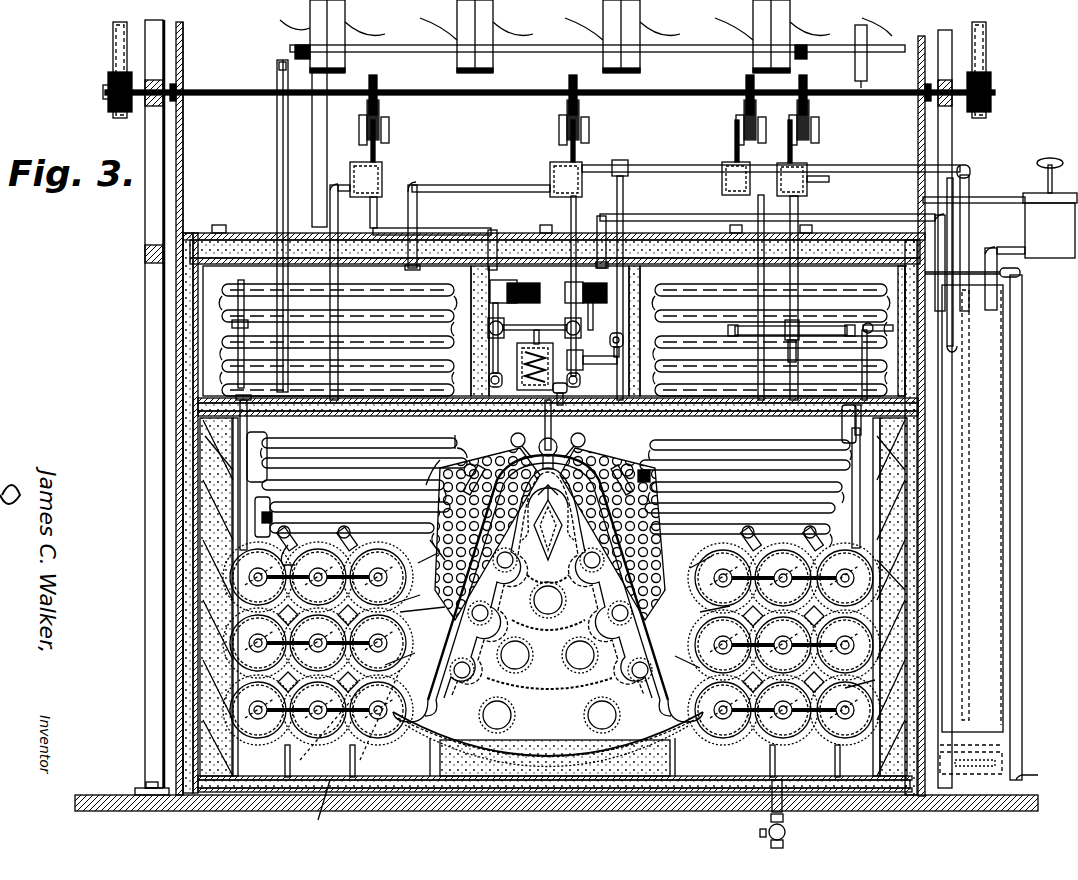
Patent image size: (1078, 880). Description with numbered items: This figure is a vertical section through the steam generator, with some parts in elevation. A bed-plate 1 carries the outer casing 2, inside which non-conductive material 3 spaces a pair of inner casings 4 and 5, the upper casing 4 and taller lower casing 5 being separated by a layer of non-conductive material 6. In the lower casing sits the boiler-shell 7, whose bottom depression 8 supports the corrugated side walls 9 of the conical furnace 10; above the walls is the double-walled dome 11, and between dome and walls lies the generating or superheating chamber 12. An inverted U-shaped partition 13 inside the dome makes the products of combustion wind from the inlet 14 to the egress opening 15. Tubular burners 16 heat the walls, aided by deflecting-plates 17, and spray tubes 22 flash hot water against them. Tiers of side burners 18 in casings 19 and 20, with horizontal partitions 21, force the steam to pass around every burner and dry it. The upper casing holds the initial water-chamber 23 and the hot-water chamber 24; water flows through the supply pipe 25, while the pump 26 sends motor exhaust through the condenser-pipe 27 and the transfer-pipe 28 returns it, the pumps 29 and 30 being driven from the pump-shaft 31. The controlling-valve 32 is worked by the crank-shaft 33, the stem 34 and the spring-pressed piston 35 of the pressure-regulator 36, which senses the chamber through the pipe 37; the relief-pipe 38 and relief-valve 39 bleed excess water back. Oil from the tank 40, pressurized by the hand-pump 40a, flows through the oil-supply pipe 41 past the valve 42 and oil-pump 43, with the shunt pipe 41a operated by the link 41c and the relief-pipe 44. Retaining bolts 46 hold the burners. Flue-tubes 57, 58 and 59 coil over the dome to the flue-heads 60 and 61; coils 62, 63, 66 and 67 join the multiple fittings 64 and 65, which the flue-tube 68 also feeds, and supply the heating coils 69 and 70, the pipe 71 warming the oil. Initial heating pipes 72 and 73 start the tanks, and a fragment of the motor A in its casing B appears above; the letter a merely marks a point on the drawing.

The bed-plate 1 is at (122, 797).
The outer casing 2 is at (196, 401).
The non-conductive material 3 is at (200, 350).
The upper inner casing 4 is at (903, 388).
The lower inner casing 5 is at (852, 778).
The layer of non-conductive material 6 is at (196, 413).
The boiler-shell 7 is at (574, 740).
The longitudinal depression 8 is at (547, 746).
The corrugated side walls 9 is at (548, 714).
The furnace 10 is at (555, 742).
The dome 11 is at (547, 514).
The generating or superheating chamber 12 is at (548, 577).
The inverted U-shaped partition 13 is at (559, 496).
The dome inlet 14 is at (548, 523).
The egress opening 15 is at (548, 426).
The tubular burners 16 is at (549, 657).
The deflecting-plates 17 is at (549, 630).
The side burners 18 is at (551, 643).
The sheet-metal casing 19 is at (233, 650).
The sheet-metal casing 20 is at (880, 648).
The horizontal partitions 21 is at (552, 679).
The flashing or spray tubes 22 is at (551, 608).
The initial water-chamber 23 is at (725, 270).
The hot-water or low-pressure chamber 24 is at (232, 272).
The water-supply pipe 25 is at (448, 228).
The pump 26 is at (800, 182).
The condenser-pipe 27 is at (799, 206).
The transfer-pipe 28 is at (470, 186).
The water-pump 29 is at (363, 170).
The water-pump 30 is at (734, 135).
The pump-shaft 31 is at (520, 96).
The controlling-valve 32 is at (504, 324).
The crank-shaft 33 is at (555, 322).
The stem 34 is at (526, 365).
The spring-pressed piston 35 is at (497, 387).
The pressure-regulator 36 is at (586, 360).
The pipe 37 is at (581, 387).
The relief-pipe 38 is at (565, 292).
The relief-valve 39 is at (515, 320).
The oil-tank 40 is at (1001, 496).
The hand-pump 40a is at (1000, 234).
The oil-supply pipe 41 is at (647, 165).
The shunt fuel-pipe 41a is at (600, 216).
The link 41c is at (604, 345).
The controlling-valve 42 is at (585, 328).
The oil-pump 43 is at (552, 168).
The relief-pipe 44 is at (675, 214).
The burner-retaining bolts 46 is at (599, 315).
The flue-tubes 57 is at (654, 681).
The flue-tubes 58 is at (560, 614).
The flue-tubes 59 is at (565, 573).
The flue-head 60 is at (741, 493).
The flue-head 61 is at (487, 534).
The heating-coil 62 is at (690, 565).
The heating-coil 63 is at (432, 556).
The multiple fitting 64 is at (850, 476).
The multiple fitting 65 is at (251, 472).
The heating-coil 66 is at (884, 486).
The heating-coil 67 is at (235, 538).
The flue-tube 68 is at (380, 446).
The heating-coil 69 is at (658, 334).
The heating-coil 70 is at (358, 330).
The pipe 71 is at (1022, 318).
The initial heating-pipe 72 is at (957, 346).
The initial heating-pipe 73 is at (278, 158).
The motor A is at (592, 113).
The casing B is at (186, 160).
The rod end a is at (274, 108).